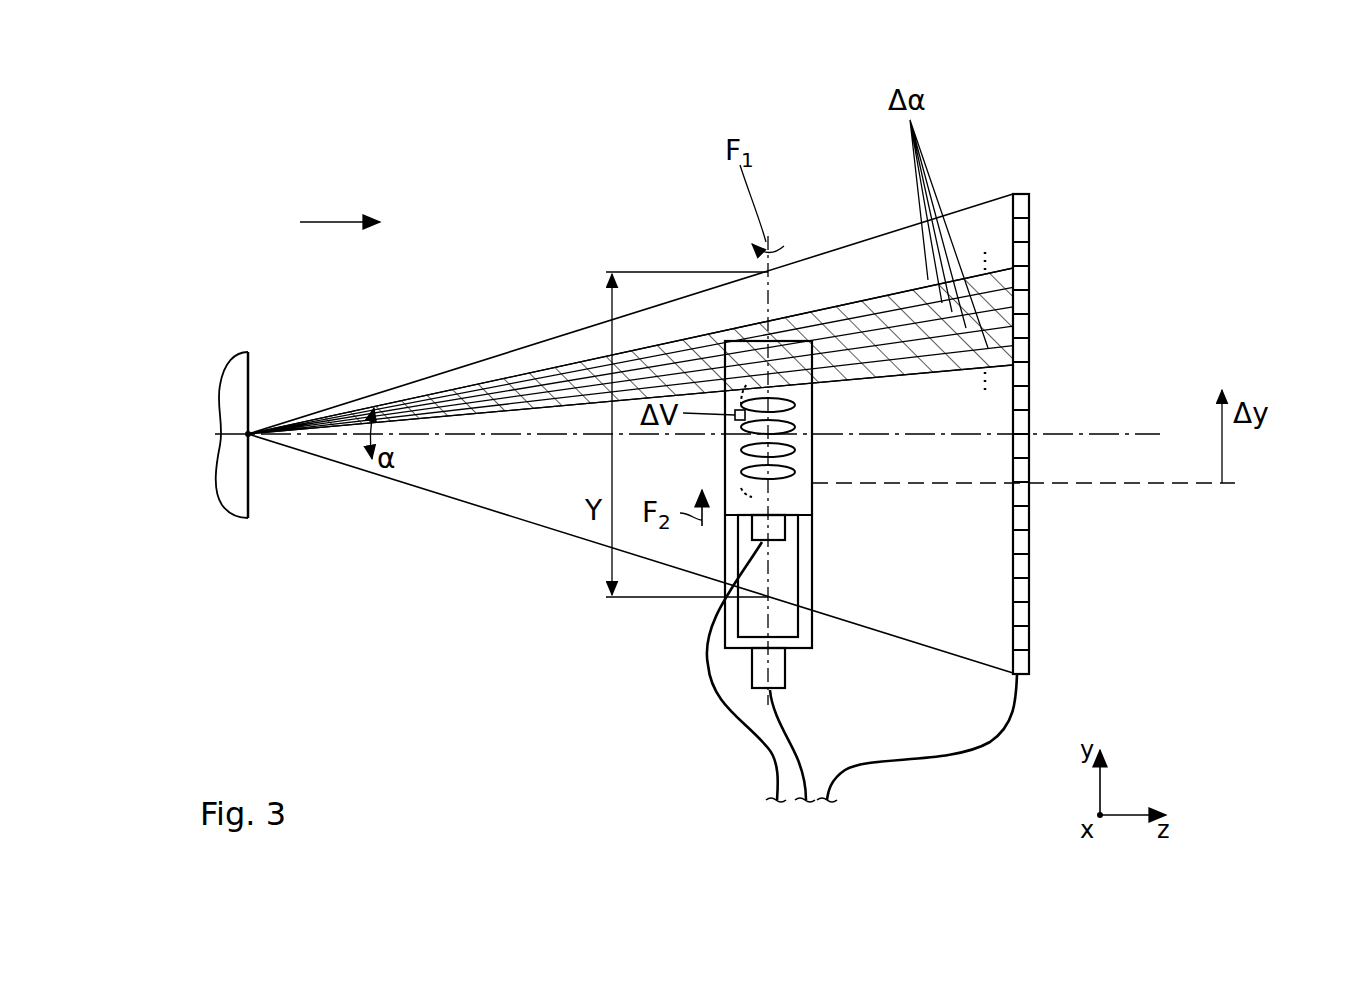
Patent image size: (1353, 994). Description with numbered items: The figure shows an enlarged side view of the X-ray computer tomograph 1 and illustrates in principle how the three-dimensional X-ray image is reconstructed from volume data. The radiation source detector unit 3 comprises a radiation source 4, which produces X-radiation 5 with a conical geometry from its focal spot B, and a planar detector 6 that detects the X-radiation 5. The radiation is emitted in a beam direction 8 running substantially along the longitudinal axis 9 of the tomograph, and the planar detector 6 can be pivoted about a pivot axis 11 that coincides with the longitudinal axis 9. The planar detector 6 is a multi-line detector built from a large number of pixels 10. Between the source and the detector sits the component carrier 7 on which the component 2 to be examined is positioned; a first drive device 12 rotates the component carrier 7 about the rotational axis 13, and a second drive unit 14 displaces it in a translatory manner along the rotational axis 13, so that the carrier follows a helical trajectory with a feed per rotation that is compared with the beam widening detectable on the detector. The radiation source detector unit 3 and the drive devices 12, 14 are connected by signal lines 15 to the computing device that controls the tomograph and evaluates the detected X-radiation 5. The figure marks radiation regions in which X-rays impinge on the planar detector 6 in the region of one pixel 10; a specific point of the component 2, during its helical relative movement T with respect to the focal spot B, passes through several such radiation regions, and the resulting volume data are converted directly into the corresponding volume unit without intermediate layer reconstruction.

The X-ray computer tomograph 1 is at (592, 189).
The component 2 is at (800, 415).
The radiation source detector unit 3 is at (1020, 186).
The radiation source 4 is at (235, 375).
The X-radiation 5 is at (443, 372).
The planar detector 6 is at (1036, 302).
The component carrier 7 is at (800, 505).
The beam direction 8 is at (337, 222).
The longitudinal axis 9 is at (313, 440).
The pixels 10 is at (1020, 663).
The pivot axis 11 is at (1146, 433).
The first drive device 12 is at (775, 552).
The rotational axis 13 is at (775, 314).
The second drive unit 14 is at (796, 670).
The signal lines 15 is at (760, 738).
The focal spot B is at (253, 425).
The helical relative movement T is at (800, 450).